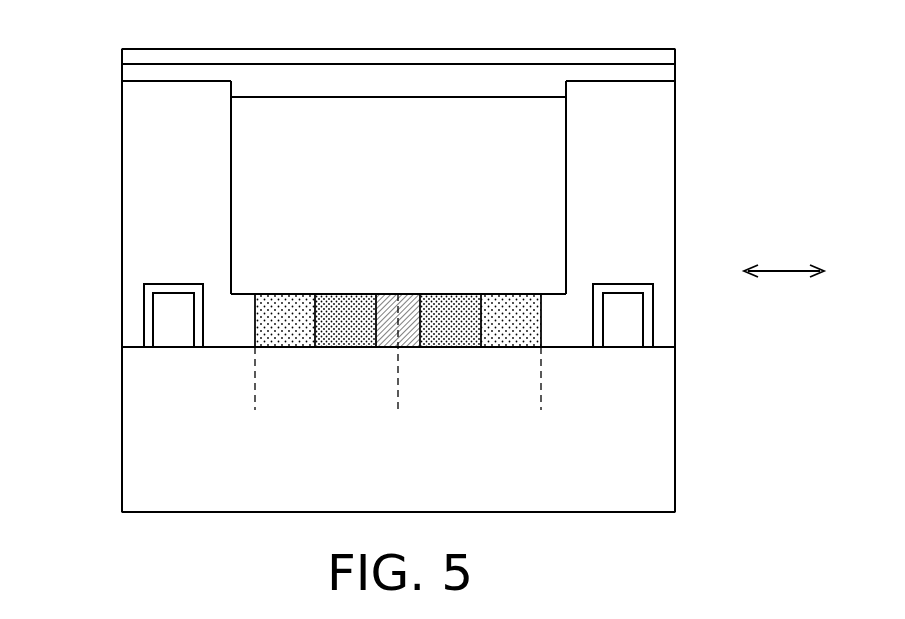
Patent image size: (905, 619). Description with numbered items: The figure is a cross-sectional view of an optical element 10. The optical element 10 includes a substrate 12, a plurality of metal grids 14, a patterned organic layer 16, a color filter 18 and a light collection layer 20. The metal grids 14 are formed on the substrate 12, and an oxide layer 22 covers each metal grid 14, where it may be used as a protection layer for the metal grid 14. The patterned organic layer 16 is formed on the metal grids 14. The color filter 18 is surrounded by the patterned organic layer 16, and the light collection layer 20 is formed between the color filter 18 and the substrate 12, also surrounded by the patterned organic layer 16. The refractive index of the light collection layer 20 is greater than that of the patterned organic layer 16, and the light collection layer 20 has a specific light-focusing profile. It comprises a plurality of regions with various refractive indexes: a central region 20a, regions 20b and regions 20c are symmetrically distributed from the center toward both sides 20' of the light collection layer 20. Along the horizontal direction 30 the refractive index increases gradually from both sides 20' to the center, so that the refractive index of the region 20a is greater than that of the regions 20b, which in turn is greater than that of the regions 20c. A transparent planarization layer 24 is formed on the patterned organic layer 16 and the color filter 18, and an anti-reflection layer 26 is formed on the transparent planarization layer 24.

The optical element 10 is at (22, 33).
The substrate 12 is at (604, 491).
The metal grids 14 is at (173, 335).
The patterned organic layer 16 is at (130, 157).
The color filter 18 is at (415, 150).
The light collection layer 20 is at (398, 263).
The region 20a is at (390, 307).
The regions 20b is at (346, 307).
The regions 20c is at (285, 307).
The sides 20' is at (398, 402).
The oxide layer 22 is at (173, 290).
The transparent planarization layer 24 is at (665, 72).
The anti-reflection layer 26 is at (665, 58).
The horizontal direction 30 is at (784, 254).